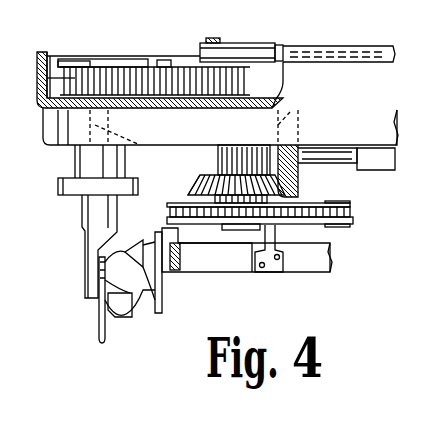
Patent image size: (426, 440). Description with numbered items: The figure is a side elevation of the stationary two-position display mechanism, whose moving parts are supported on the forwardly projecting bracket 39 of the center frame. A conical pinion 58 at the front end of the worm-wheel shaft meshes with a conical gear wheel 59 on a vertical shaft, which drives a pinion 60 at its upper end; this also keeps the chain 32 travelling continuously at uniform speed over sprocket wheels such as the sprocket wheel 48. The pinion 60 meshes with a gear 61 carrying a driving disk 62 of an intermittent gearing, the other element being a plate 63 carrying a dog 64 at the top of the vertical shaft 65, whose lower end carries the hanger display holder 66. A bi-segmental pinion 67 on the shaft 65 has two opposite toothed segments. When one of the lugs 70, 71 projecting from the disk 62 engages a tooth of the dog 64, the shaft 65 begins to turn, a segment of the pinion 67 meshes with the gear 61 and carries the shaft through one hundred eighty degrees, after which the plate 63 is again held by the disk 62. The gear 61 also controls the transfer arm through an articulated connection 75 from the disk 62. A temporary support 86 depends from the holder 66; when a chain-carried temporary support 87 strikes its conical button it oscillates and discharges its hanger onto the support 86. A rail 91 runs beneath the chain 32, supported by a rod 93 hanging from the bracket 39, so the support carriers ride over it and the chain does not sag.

The chain 32 is at (345, 206).
The forwardly projecting bracket 39 is at (37, 104).
The sprocket wheel 48 is at (305, 223).
The conical pinion 58 is at (298, 181).
The conical gear wheel 59 is at (200, 182).
The pinion 60 is at (282, 98).
The gear 61 is at (162, 80).
The driving disk 62 is at (186, 68).
The plate 63 is at (38, 53).
The dog 64 is at (68, 61).
The vertical shaft 65 is at (130, 143).
The hanger display holder 66 is at (83, 207).
The bi-segmental pinion 67 is at (75, 78).
The lug 70 is at (133, 60).
The lug 71 is at (165, 60).
The articulated connection 75 is at (350, 46).
The temporary support 86 is at (100, 322).
The temporary support 87 is at (160, 312).
The rail 91 is at (243, 267).
The rod 93 is at (272, 272).